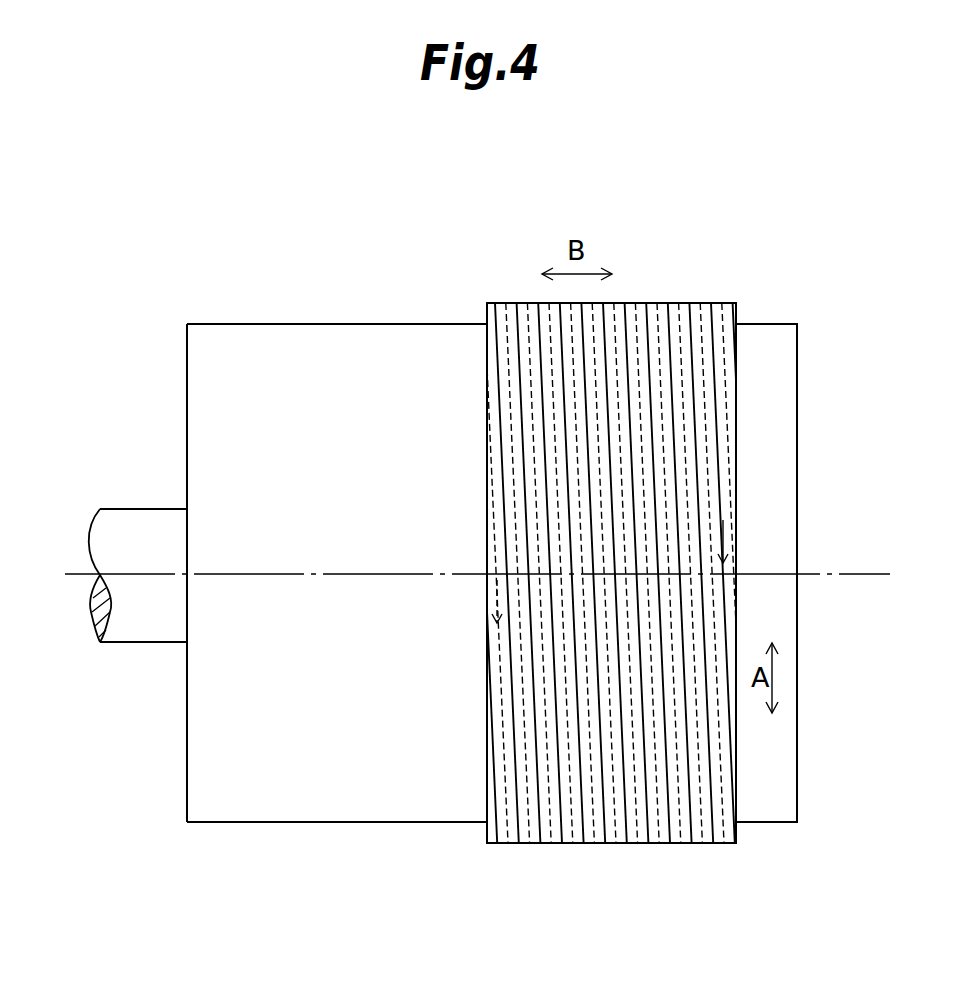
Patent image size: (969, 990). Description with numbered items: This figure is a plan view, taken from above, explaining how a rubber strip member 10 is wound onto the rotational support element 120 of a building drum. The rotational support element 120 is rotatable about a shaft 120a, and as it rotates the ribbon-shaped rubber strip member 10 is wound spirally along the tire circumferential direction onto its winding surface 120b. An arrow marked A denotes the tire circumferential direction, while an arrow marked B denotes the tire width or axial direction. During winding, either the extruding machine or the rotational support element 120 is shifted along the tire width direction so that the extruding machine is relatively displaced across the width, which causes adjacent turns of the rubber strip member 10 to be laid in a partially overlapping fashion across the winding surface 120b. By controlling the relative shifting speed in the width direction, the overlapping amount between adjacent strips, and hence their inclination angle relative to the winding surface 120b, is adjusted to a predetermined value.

The rubber strip member 10 is at (680, 315).
The rotational support element 120 is at (414, 516).
The shaft 120a is at (92, 613).
The winding surface 120b is at (330, 350).